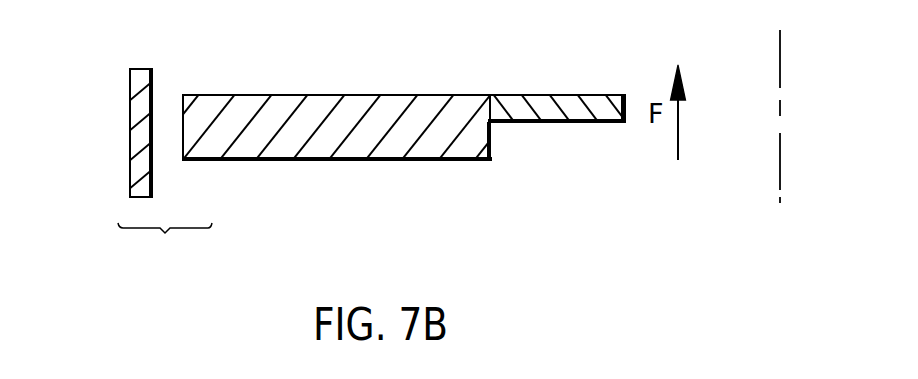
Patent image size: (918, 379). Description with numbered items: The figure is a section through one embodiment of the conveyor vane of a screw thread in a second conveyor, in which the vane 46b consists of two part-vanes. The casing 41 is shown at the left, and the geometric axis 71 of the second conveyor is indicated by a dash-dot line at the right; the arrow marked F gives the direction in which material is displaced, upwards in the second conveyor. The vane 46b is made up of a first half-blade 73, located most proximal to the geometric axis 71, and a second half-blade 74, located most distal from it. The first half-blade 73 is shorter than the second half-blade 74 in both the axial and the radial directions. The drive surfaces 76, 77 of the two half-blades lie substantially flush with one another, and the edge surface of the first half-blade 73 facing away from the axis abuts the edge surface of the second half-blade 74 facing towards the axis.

The casing 41 is at (129, 127).
The vane 46b is at (493, 93).
The geometric axis 71 is at (780, 127).
The first half-blade 73 is at (550, 125).
The second half-blade 74 is at (345, 146).
The drive surface 76 is at (582, 94).
The drive surface 77 is at (282, 100).